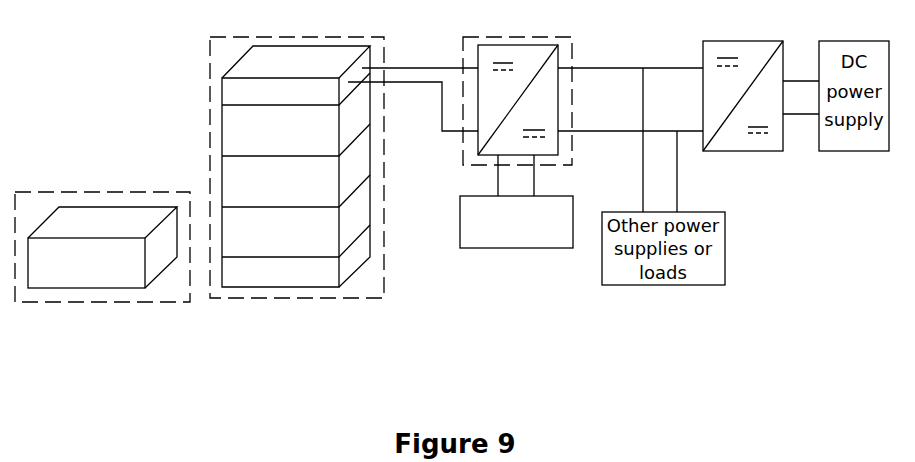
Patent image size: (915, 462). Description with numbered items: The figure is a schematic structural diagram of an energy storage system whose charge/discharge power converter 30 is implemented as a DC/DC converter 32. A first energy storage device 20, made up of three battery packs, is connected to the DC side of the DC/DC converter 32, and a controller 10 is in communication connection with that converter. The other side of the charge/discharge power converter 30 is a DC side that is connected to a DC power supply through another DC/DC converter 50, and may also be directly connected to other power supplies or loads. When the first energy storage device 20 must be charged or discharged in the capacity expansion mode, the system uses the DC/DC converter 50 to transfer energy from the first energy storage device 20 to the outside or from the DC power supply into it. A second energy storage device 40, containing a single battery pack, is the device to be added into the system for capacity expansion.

The controller 10 is at (508, 248).
The first energy storage device 20 is at (384, 263).
The charge/discharge power converter 30 is at (529, 117).
The DC/DC converter 32 is at (490, 157).
The second energy storage device 40 is at (77, 192).
The DC/DC converter 50 is at (740, 152).